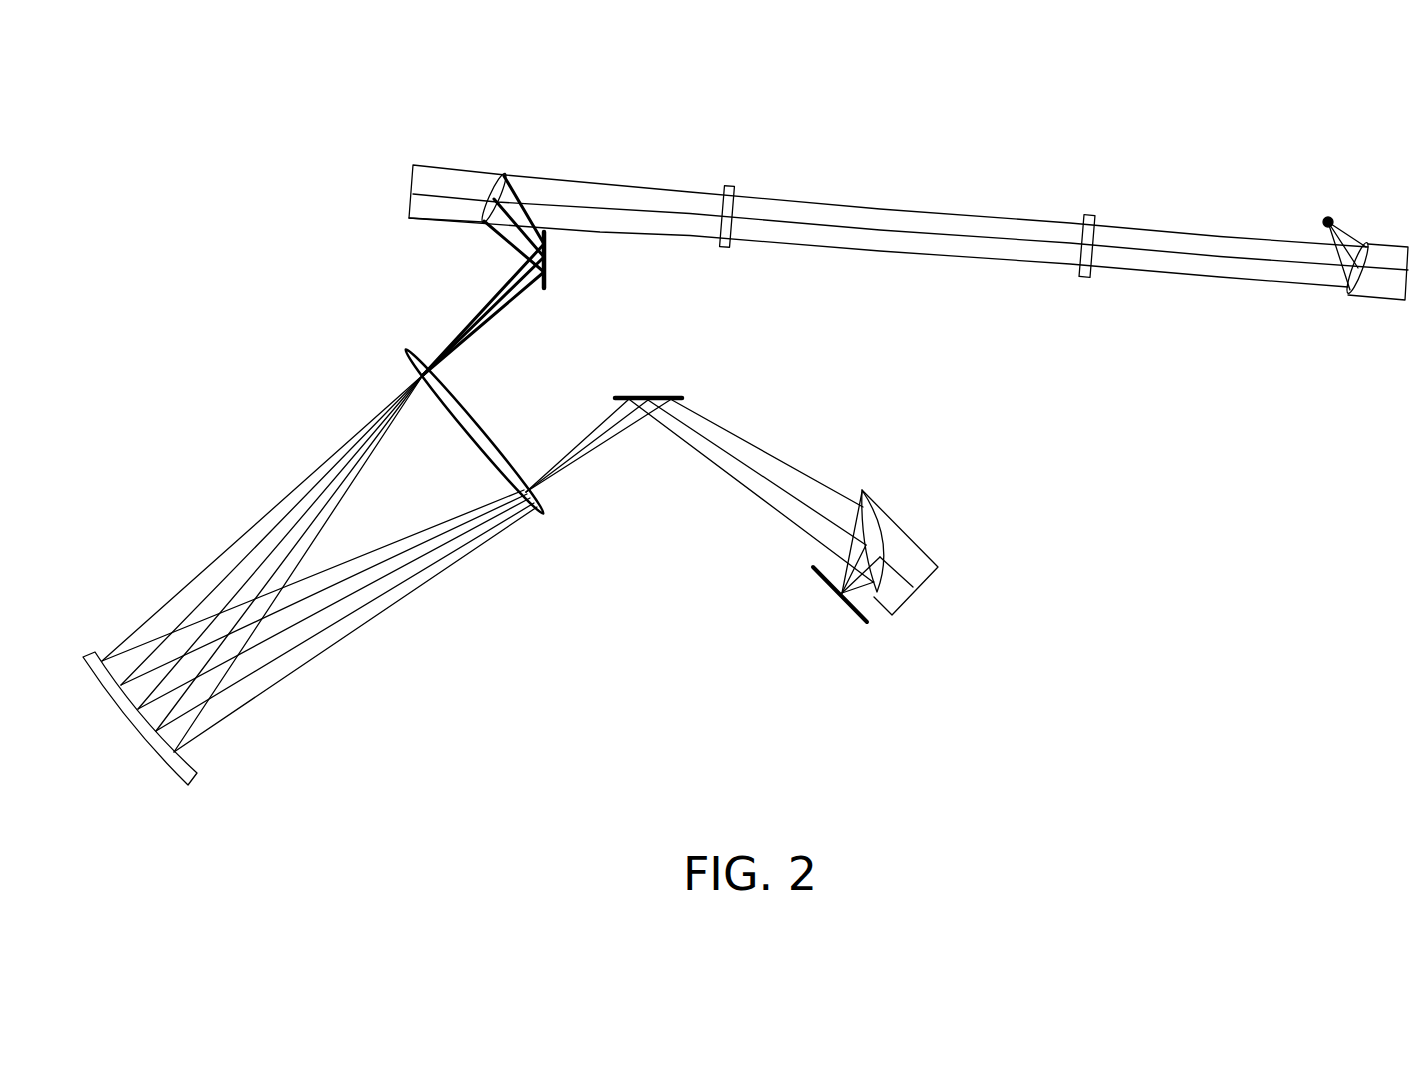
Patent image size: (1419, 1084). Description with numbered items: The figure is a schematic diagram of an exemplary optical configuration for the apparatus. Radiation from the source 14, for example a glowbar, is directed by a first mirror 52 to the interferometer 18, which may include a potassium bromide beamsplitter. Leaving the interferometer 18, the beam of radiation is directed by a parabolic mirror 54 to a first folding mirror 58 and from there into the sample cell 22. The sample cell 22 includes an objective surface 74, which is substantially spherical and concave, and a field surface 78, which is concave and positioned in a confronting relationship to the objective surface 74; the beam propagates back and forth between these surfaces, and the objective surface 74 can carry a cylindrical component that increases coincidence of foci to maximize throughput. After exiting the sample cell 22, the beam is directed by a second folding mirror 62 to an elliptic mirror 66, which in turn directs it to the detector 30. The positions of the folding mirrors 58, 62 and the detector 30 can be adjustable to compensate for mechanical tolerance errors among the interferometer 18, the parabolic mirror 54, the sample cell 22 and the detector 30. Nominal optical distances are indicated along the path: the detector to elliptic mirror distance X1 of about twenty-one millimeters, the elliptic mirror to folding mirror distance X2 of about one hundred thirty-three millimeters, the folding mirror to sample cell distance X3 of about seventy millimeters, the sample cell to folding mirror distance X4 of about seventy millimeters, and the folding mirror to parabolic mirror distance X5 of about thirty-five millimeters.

The source 14 is at (1326, 218).
The interferometer 18 is at (716, 175).
The sample cell 22 is at (300, 406).
The detector 30 is at (852, 604).
The first mirror 52 is at (1392, 302).
The parabolic mirror 54 is at (428, 222).
The first folding mirror 58 is at (548, 250).
The second folding mirror 62 is at (653, 398).
The elliptic mirror 66 is at (904, 534).
The objective surface 74 is at (157, 755).
The field surface 78 is at (492, 438).
The detector to elliptic mirror distance X1 is at (824, 549).
The elliptic mirror to folding mirror distance X2 is at (738, 505).
The folding mirror to sample cell distance X3 is at (617, 451).
The sample cell to folding mirror distance X4 is at (514, 323).
The folding mirror to parabolic mirror distance X5 is at (496, 252).